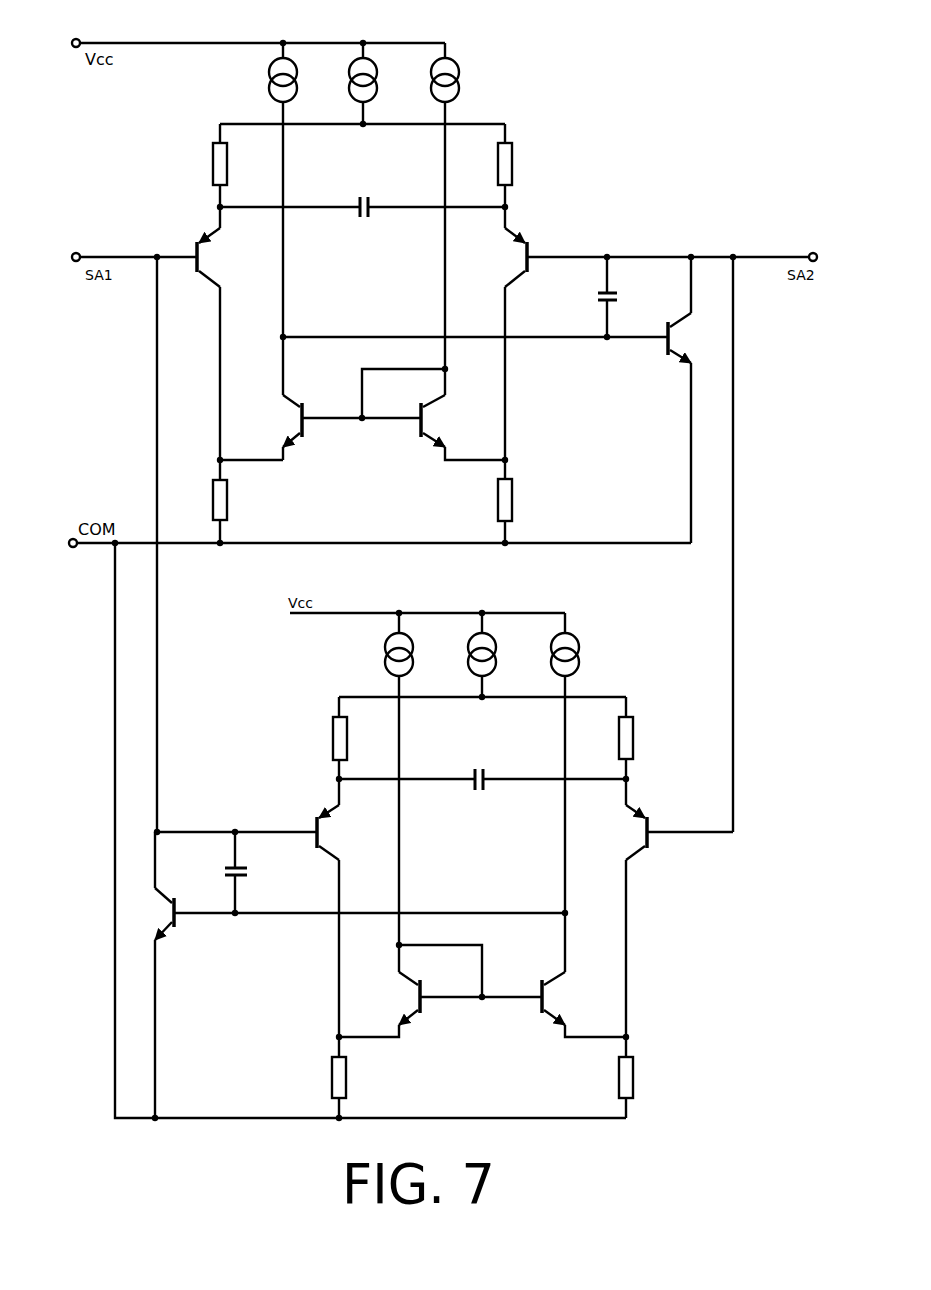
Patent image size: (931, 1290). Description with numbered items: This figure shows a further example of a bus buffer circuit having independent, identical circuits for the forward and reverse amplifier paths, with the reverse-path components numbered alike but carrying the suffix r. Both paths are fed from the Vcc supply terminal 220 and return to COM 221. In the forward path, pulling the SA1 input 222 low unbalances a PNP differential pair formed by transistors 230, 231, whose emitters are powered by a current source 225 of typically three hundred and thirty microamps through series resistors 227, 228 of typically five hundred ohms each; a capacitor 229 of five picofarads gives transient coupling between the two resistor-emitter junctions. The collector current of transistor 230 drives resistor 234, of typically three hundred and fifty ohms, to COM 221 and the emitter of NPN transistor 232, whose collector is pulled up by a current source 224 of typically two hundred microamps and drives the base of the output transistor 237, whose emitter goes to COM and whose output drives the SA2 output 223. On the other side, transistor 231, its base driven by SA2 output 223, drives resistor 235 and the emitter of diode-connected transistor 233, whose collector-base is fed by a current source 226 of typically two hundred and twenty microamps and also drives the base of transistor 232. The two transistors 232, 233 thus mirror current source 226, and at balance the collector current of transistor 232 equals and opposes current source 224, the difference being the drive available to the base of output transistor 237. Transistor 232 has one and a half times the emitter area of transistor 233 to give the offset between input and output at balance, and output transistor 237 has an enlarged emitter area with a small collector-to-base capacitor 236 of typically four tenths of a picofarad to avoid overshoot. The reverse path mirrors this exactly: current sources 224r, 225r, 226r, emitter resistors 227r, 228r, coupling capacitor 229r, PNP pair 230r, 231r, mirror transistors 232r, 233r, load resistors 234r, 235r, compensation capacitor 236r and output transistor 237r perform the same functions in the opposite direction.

The Vcc supply terminal 220 is at (72, 42).
The COM 221 is at (68, 543).
The SA1 input 222 is at (71, 257).
The SA2 output 223 is at (818, 250).
The current source 224 is at (262, 85).
The current source 225 is at (347, 82).
The current source 226 is at (480, 70).
The resistor 227 is at (212, 182).
The resistor 228 is at (513, 182).
The capacitor 229 is at (353, 198).
The transistor 230 is at (197, 268).
The transistor 231 is at (536, 250).
The transistor 232 is at (308, 437).
The transistor 233 is at (416, 436).
The resistor 234 is at (270, 482).
The resistor 235 is at (497, 487).
The capacitor 236 is at (592, 296).
The output transistor 237 is at (700, 350).
The current source 224r is at (580, 658).
The current source 225r is at (518, 644).
The current source 226r is at (384, 655).
The resistor 227r is at (668, 758).
The resistor 228r is at (331, 755).
The capacitor 229r is at (490, 772).
The transistor 230r is at (652, 842).
The transistor 231r is at (312, 820).
The transistor 232r is at (536, 1004).
The transistor 233r is at (426, 1008).
The resistor 234r is at (617, 1062).
The resistor 235r is at (348, 1061).
The capacitor 236r is at (270, 878).
The output transistor 237r is at (187, 926).